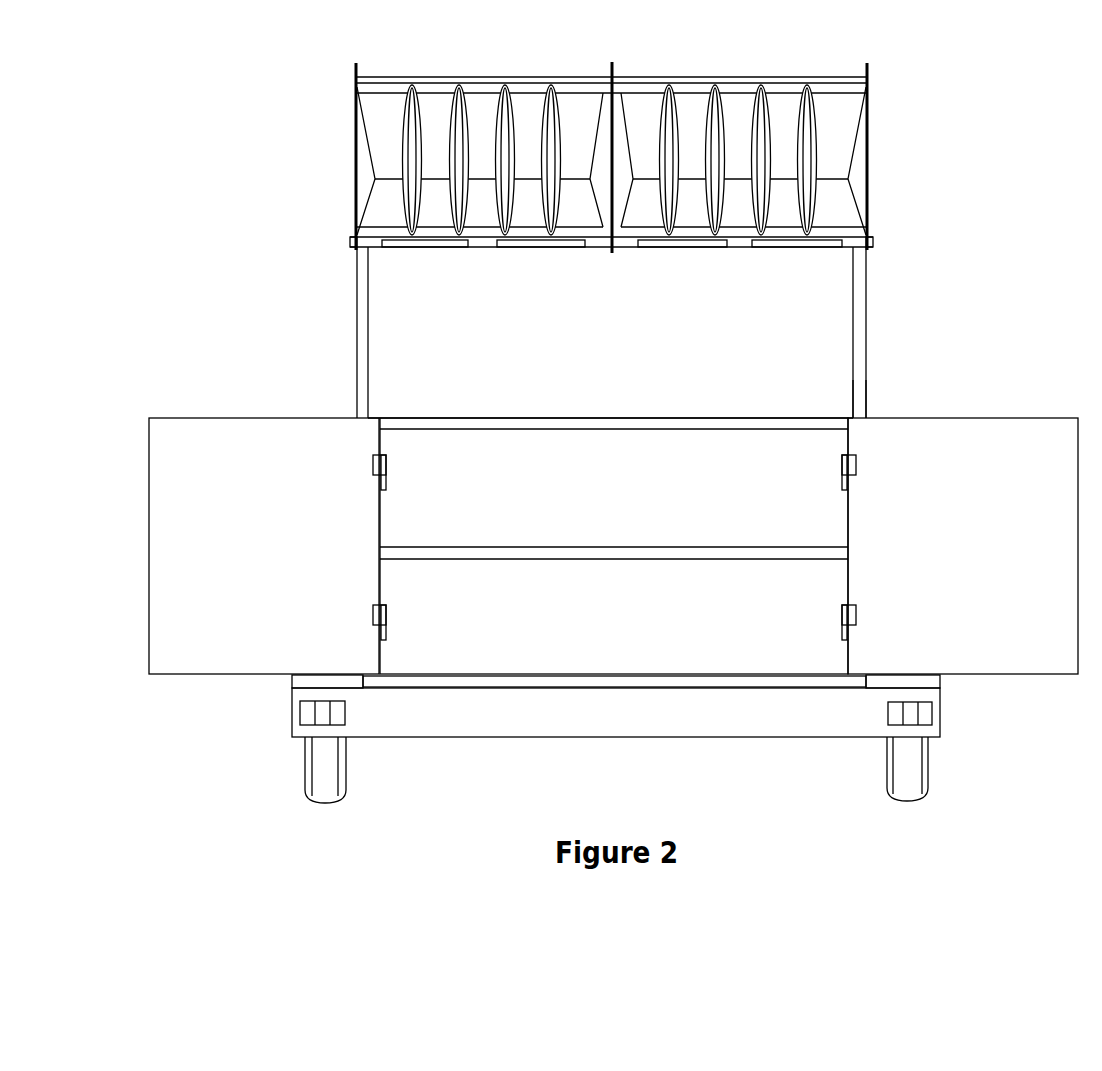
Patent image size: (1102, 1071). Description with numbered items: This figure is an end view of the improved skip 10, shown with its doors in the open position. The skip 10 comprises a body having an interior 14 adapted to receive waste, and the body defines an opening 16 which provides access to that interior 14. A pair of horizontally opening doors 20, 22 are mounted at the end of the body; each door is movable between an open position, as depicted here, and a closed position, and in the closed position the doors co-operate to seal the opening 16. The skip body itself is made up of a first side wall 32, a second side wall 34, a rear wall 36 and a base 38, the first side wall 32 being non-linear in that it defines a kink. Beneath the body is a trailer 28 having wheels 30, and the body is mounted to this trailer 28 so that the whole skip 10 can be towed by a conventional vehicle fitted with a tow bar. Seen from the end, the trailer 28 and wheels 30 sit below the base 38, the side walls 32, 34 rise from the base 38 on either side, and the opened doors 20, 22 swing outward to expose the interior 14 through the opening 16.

The skip 10 is at (613, 458).
The interior 14 is at (630, 352).
The opening 16 is at (855, 332).
The horizontally opening door 20 is at (276, 551).
The horizontally opening door 22 is at (983, 551).
The trailer 28 is at (670, 727).
The wheels 30 is at (325, 790).
The first side wall 32 is at (867, 387).
The second side wall 34 is at (353, 388).
The rear wall 36 is at (827, 295).
The base 38 is at (558, 688).